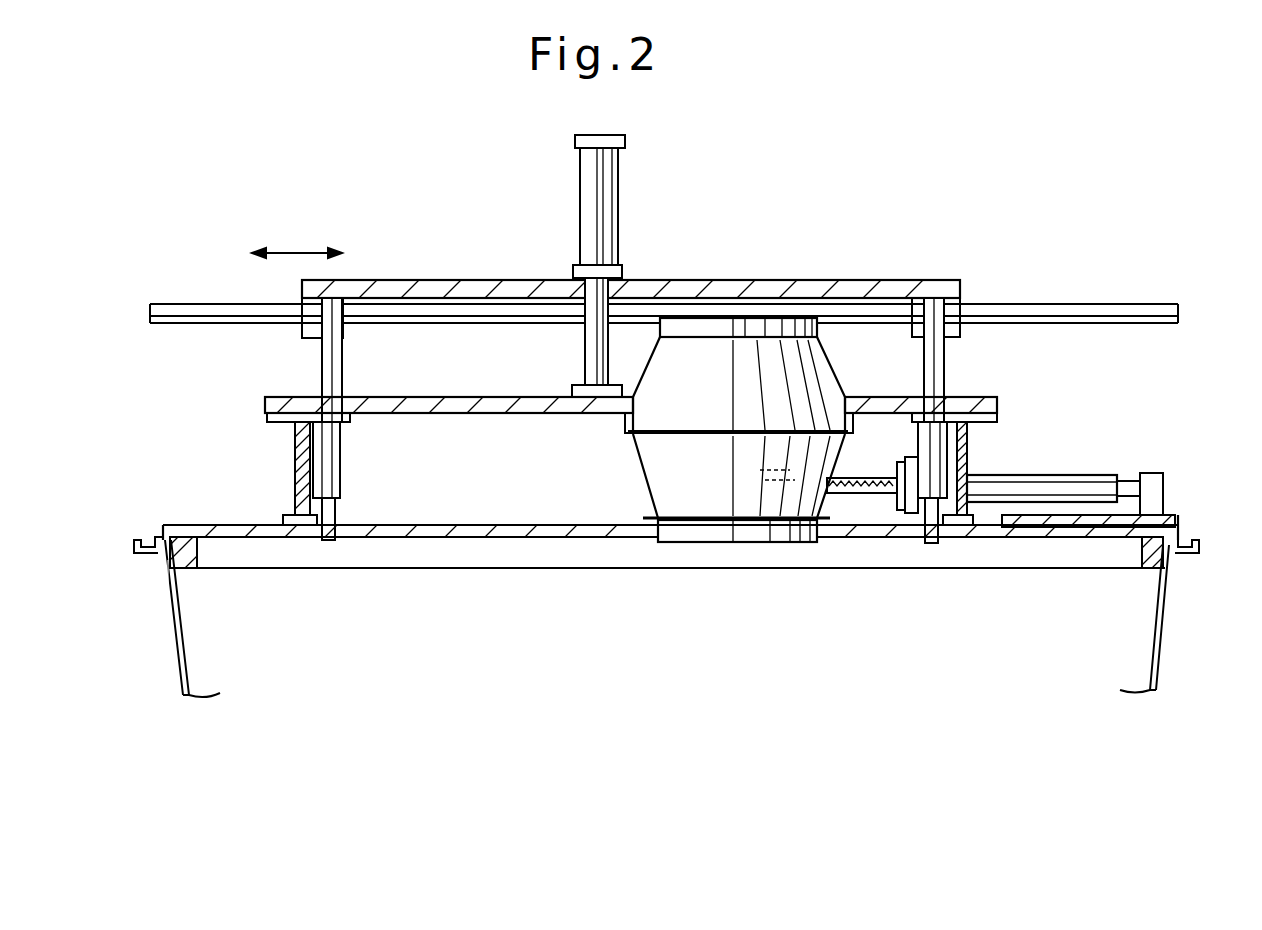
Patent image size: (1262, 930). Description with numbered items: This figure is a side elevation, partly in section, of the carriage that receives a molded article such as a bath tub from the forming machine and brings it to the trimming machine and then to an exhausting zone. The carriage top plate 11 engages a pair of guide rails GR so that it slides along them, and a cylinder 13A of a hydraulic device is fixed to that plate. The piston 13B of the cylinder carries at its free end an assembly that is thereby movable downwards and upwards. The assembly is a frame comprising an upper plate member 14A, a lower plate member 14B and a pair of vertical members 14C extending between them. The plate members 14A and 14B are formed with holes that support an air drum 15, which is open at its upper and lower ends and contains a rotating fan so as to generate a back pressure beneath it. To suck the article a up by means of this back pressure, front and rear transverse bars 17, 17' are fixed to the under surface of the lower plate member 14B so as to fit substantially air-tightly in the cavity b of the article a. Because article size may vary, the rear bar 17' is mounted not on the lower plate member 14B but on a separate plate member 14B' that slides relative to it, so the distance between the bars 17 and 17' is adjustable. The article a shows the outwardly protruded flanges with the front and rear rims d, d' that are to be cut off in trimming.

The carriage top plate 11 is at (468, 284).
The guide rails GR is at (181, 322).
The cylinder 13A is at (607, 200).
The piston 13B is at (608, 302).
The upper plate member 14A is at (455, 405).
The lower plate member 14B is at (670, 574).
The separate plate member 14B' is at (1037, 492).
The vertical members 14C is at (296, 456).
The air drum 15 is at (795, 355).
The front transverse bar 17 is at (206, 583).
The rear transverse bar 17' is at (1125, 583).
The molded bath tub a is at (176, 655).
The cavity b is at (1153, 658).
The front rim d is at (143, 565).
The rear rim d' is at (1190, 561).